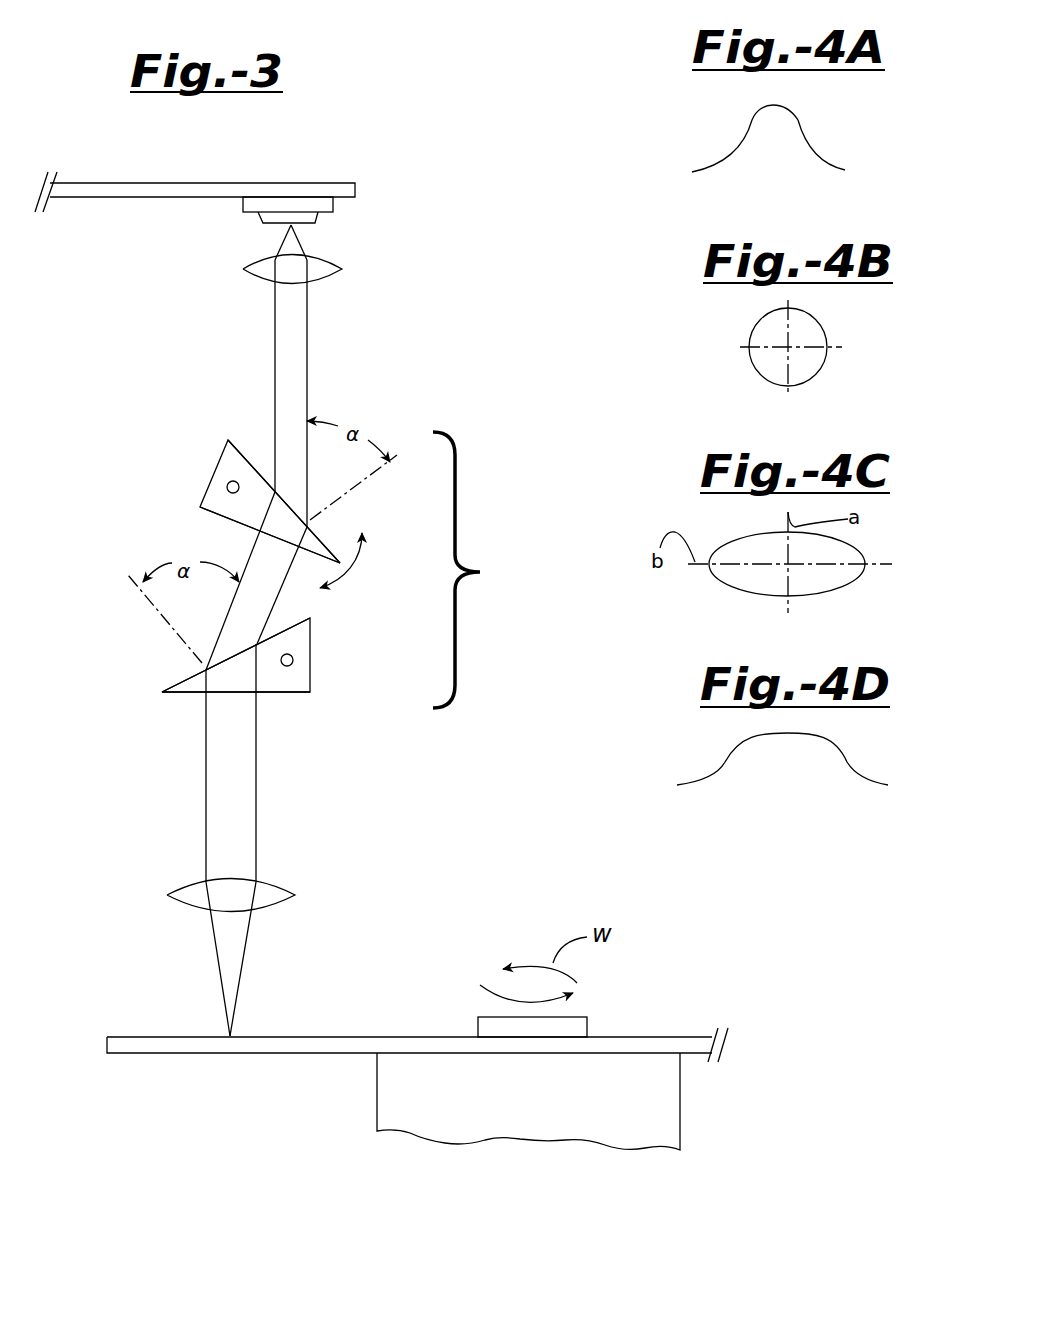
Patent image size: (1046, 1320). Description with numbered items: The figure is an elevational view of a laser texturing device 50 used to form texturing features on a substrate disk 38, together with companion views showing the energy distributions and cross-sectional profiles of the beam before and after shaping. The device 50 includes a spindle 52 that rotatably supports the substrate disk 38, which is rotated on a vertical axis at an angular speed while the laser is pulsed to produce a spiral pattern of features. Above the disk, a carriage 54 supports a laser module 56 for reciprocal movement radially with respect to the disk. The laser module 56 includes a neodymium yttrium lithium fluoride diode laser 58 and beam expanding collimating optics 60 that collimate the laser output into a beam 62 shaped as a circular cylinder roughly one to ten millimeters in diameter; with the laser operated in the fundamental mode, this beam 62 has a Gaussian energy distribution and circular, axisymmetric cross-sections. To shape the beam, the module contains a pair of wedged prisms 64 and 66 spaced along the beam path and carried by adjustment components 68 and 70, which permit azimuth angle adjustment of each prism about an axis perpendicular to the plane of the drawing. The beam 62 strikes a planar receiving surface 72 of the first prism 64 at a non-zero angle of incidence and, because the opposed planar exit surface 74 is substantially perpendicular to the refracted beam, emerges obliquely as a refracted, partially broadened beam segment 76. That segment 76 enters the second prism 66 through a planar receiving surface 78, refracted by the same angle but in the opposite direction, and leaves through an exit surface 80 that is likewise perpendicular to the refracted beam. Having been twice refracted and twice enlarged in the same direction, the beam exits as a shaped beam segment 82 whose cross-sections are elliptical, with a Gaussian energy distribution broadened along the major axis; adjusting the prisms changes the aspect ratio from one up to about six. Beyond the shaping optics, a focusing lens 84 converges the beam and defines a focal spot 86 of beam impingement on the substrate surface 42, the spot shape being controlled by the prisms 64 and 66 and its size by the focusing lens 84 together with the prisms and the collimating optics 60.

The substrate disk 38 is at (143, 1057).
The substrate surface 42 is at (315, 1037).
The laser texturing device 50 is at (322, 172).
The spindle 52 is at (377, 1112).
The carriage 54 is at (157, 182).
The laser module 56 is at (475, 570).
The diode laser 58 is at (315, 223).
The beam expanding collimating optics 60 is at (332, 277).
The beam 62 is at (274, 365).
The first wedged prism 64 is at (227, 448).
The second wedged prism 66 is at (312, 633).
The adjustment component 68 is at (227, 486).
The adjustment component 70 is at (293, 660).
The planar receiving surface 72 is at (243, 450).
The planar exit surface 74 is at (210, 508).
The refracted, partially broadened beam segment 76 is at (248, 562).
The planar receiving surface 78 is at (290, 615).
The exit surface 80 is at (258, 695).
The shaped beam segment 82 is at (206, 808).
The focusing lens 84 is at (188, 883).
The focal spot 86 is at (228, 1035).